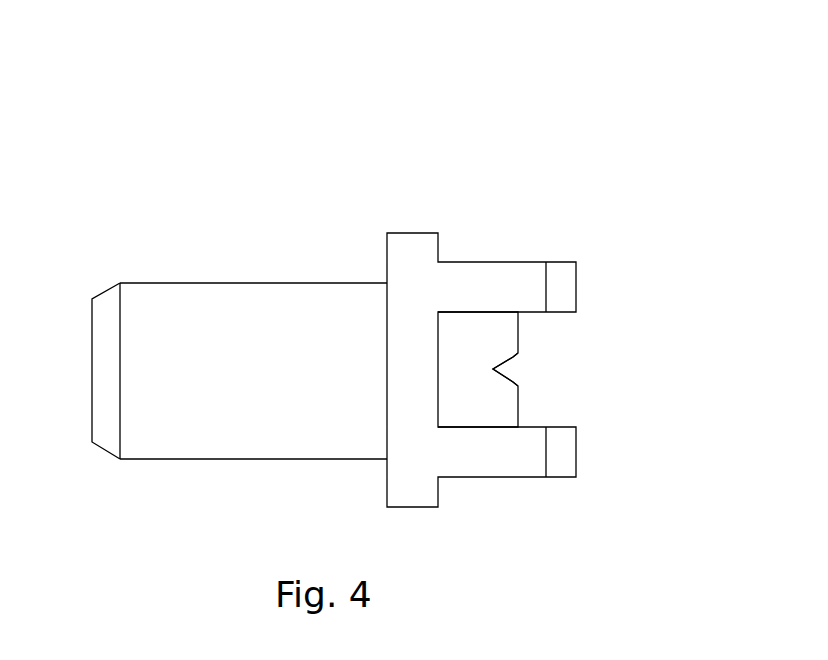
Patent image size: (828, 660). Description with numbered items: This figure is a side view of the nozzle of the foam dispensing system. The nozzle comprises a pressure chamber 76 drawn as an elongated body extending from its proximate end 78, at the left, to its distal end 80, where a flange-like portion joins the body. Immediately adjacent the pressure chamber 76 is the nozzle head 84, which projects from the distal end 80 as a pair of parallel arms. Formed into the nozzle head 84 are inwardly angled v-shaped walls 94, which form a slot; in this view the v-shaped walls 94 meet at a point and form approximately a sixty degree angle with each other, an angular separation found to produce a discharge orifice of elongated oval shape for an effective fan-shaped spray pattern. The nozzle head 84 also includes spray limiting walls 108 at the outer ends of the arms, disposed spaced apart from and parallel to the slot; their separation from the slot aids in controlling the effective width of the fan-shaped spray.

The pressure chamber 76 is at (266, 283).
The proximate end 78 is at (100, 448).
The distal end 80 is at (387, 460).
The nozzle head 84 is at (492, 262).
The spray limiting walls 108 is at (555, 262).
The inwardly angled v-shaped walls 94 is at (496, 367).